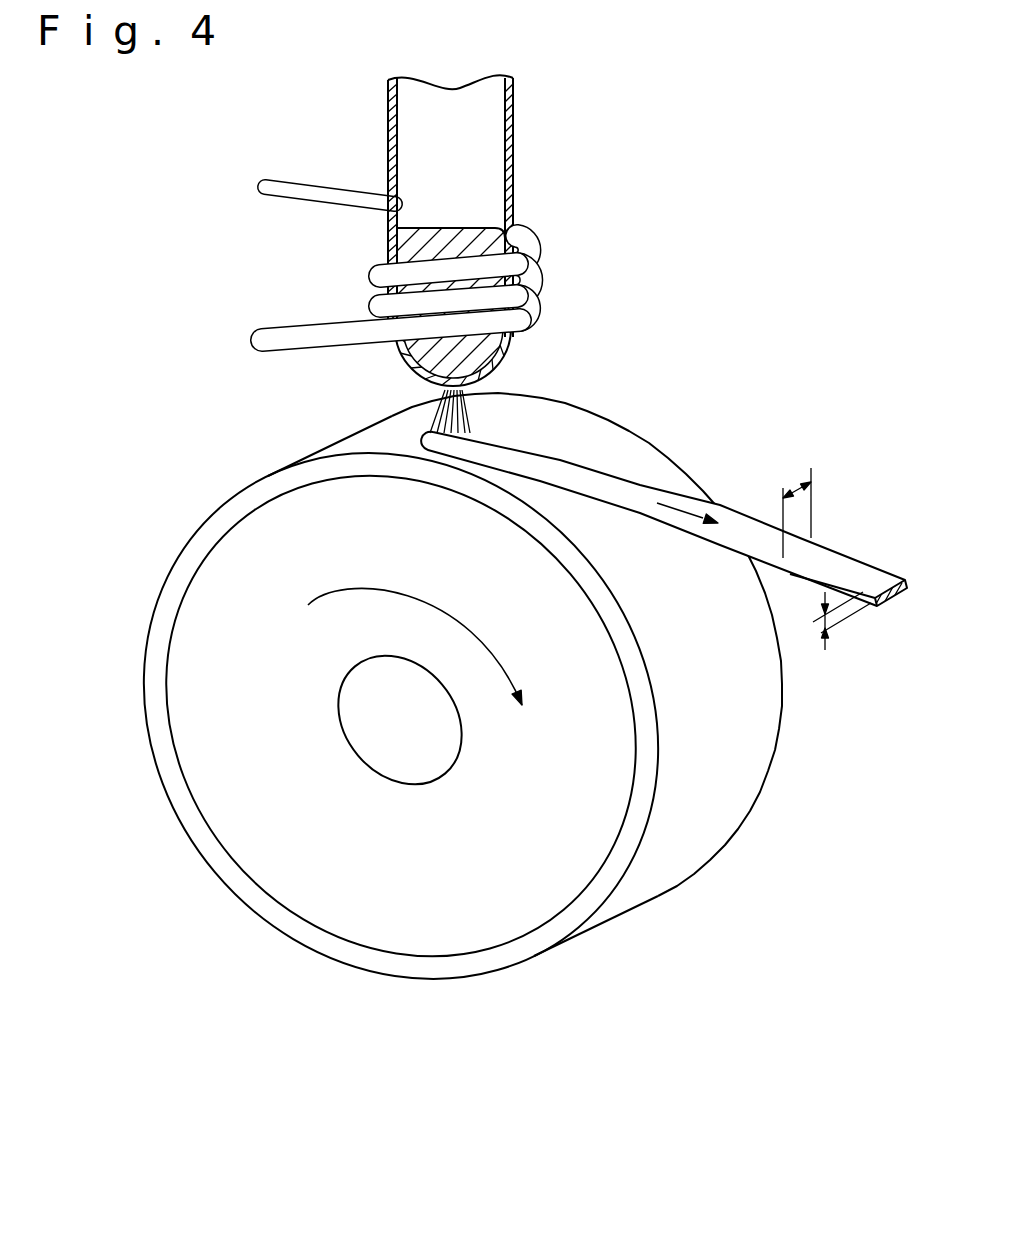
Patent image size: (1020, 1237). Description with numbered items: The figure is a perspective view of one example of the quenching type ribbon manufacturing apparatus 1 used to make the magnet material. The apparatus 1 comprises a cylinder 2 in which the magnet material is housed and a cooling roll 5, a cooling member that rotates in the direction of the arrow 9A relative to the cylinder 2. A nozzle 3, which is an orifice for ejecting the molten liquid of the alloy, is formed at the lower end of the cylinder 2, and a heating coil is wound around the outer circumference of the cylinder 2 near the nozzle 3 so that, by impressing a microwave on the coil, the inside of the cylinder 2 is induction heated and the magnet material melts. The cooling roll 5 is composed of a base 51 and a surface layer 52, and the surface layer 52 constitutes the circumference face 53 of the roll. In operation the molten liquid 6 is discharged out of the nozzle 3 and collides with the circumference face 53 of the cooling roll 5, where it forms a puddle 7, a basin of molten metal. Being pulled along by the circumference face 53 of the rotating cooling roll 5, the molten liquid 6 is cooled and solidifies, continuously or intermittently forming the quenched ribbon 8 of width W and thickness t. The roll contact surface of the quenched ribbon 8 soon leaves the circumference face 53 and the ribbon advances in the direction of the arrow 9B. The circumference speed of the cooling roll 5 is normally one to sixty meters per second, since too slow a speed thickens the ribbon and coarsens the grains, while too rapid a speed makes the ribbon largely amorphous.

The quenching type ribbon manufacturing apparatus 1 is at (733, 257).
The cylinder 2 is at (508, 132).
The nozzle 3 is at (435, 388).
The cooling roll 5 is at (523, 970).
The molten liquid 6 is at (478, 357).
The puddle 7 is at (460, 432).
The quenched ribbon 8 is at (850, 572).
The arrow 9A is at (415, 621).
The arrow 9B is at (680, 512).
The base 51 is at (348, 898).
The surface layer 52 is at (398, 960).
The circumference face 53 is at (747, 743).